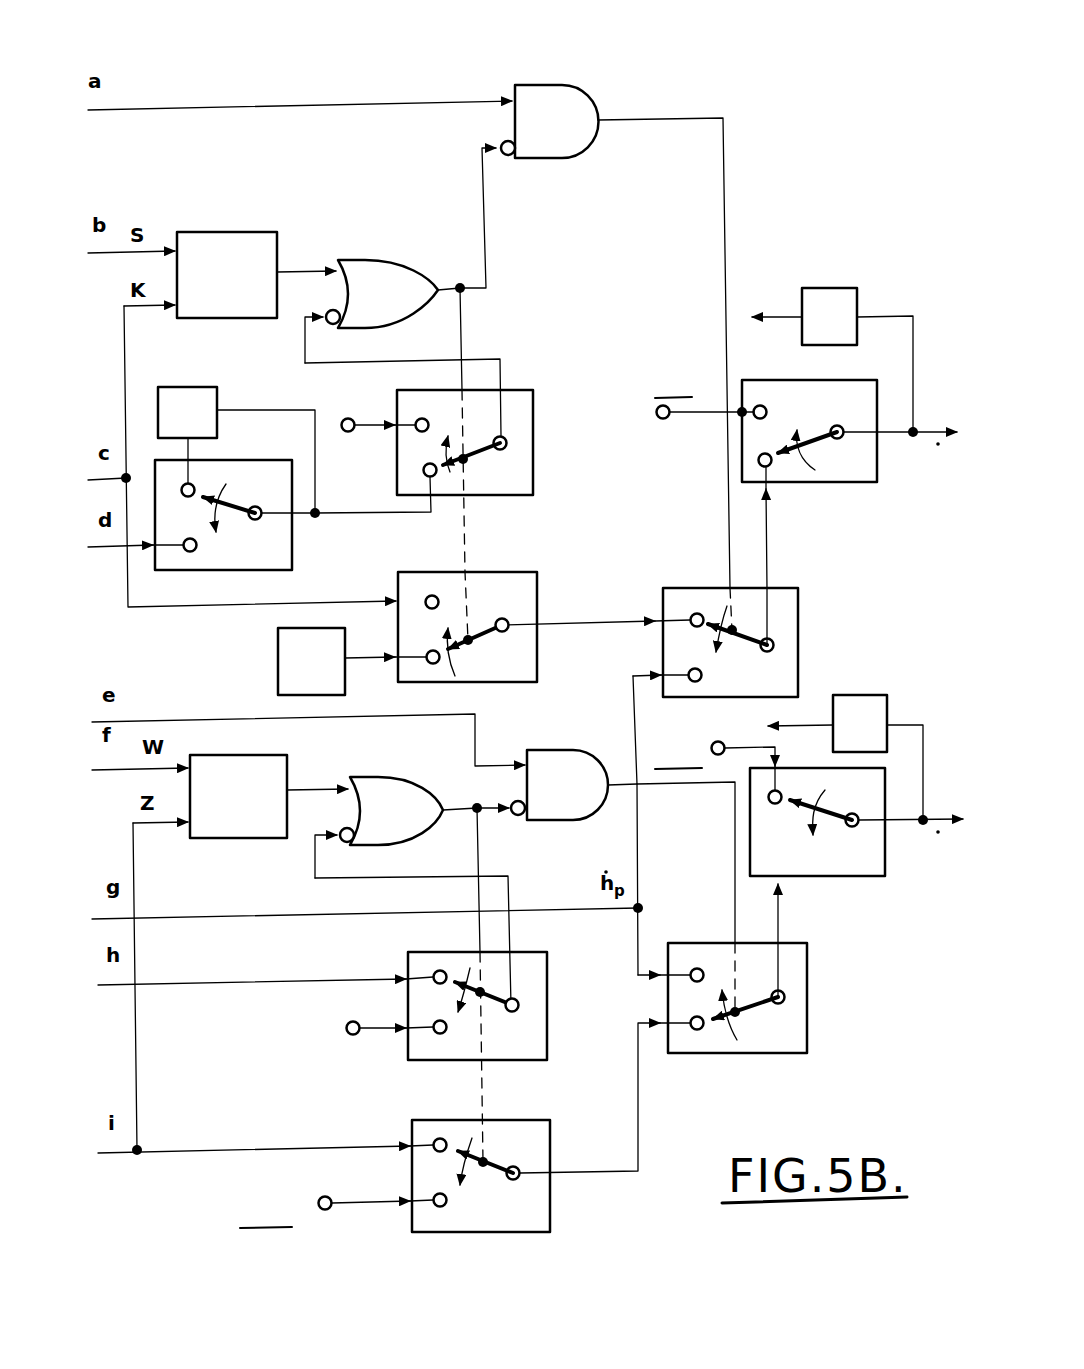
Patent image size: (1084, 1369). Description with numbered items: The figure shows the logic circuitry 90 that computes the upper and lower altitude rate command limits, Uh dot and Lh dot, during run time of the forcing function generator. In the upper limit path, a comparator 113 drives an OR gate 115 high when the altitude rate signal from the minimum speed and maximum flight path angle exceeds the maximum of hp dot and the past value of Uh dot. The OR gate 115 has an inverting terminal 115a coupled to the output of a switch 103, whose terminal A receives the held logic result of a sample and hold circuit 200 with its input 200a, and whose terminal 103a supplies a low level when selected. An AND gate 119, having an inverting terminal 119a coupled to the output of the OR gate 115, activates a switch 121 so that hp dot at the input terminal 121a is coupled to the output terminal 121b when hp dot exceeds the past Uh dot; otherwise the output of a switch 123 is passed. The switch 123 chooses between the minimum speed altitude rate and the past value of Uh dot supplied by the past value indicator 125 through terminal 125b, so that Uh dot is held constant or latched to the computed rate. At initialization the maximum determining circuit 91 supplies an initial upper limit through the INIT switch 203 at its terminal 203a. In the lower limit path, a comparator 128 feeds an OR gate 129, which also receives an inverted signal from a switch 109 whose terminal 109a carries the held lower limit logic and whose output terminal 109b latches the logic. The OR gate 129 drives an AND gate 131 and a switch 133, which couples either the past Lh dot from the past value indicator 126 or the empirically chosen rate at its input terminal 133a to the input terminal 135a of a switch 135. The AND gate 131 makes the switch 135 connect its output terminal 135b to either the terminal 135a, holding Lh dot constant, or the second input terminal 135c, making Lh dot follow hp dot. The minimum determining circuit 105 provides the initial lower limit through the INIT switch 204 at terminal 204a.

The logic circuit 90 is at (782, 54).
The comparator 113 is at (222, 232).
The OR gate 115 is at (392, 262).
The inverting terminal 115a is at (333, 325).
The AND gate 119 is at (588, 98).
The inverting terminal 119a is at (508, 155).
The past value indicator 125 is at (828, 288).
The switch output terminal 125b is at (504, 619).
The switch 103 is at (533, 420).
The terminal 103a is at (423, 471).
The sample and hold circuit 200 is at (292, 538).
The switch input terminal 200a is at (190, 552).
The switch 203 is at (742, 448).
The switch input terminal 203a is at (760, 405).
The maximum determining circuit 91 is at (695, 410).
The switch 123 is at (498, 570).
The switch 121 is at (783, 588).
The input terminal 121a is at (693, 672).
The output terminal 121b is at (785, 650).
The past value indicator 126 is at (870, 695).
The minimum determining circuit 105 is at (711, 755).
The switching circuit 204 is at (882, 878).
The switch input terminal 204a is at (768, 795).
The comparator 128 is at (238, 838).
The OR gate 129 is at (420, 778).
The AND gate 131 is at (563, 750).
The switch 109 is at (547, 968).
The terminal 109a is at (437, 970).
The output terminal 109b is at (515, 1010).
The switch 133 is at (550, 1135).
The input terminal 133a is at (441, 1137).
The switch 135 is at (807, 960).
The input terminal 135a is at (697, 1030).
The output terminal 135b is at (780, 1005).
The second input terminal 135c is at (697, 968).